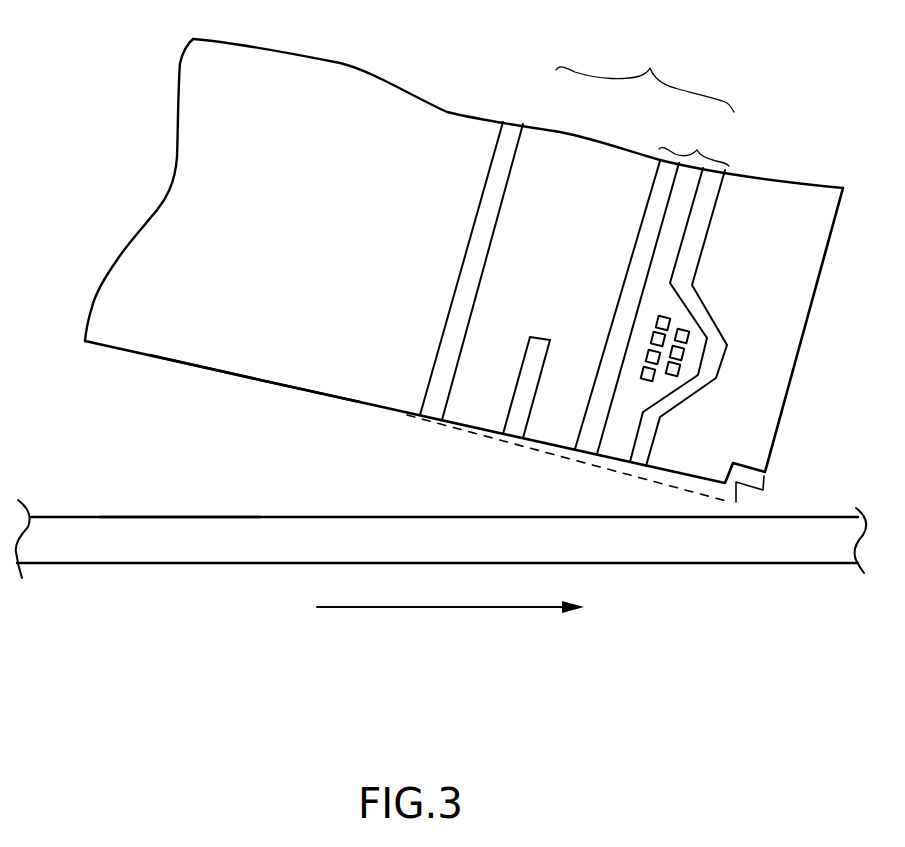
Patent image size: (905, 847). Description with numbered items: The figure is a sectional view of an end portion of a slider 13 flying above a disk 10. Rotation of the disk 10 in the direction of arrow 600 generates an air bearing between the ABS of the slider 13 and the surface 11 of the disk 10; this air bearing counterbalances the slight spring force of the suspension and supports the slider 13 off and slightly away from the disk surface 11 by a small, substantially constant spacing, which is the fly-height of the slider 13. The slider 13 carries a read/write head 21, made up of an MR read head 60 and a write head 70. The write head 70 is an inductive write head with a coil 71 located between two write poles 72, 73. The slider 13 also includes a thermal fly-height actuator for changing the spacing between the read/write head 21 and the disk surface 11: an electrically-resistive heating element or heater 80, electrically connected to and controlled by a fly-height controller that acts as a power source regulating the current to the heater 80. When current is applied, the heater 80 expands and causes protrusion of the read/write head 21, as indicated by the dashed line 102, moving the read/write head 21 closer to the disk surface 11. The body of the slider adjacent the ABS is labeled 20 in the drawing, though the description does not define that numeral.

The disk 10 is at (780, 548).
The disk surface 11 is at (157, 517).
The slider 13 is at (188, 329).
The slider 20 is at (202, 368).
The read/write head 21 is at (645, 76).
The MR read head 60 is at (527, 370).
The write head 70 is at (694, 145).
The coil 71 is at (688, 340).
The write pole 72 is at (587, 443).
The write pole 73 is at (635, 450).
The heater 80 is at (468, 237).
The dashed line 102 is at (527, 450).
The arrow 600 is at (368, 607).
The air bearing surface ABS is at (308, 393).